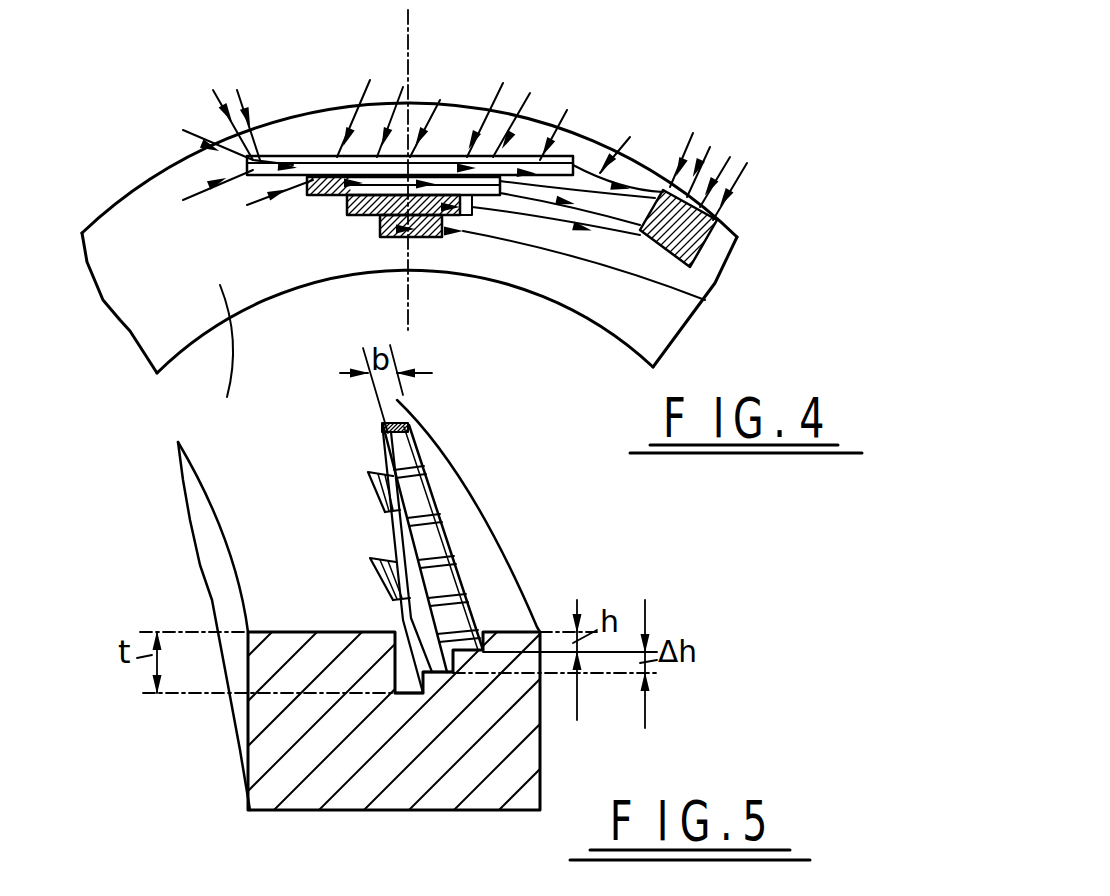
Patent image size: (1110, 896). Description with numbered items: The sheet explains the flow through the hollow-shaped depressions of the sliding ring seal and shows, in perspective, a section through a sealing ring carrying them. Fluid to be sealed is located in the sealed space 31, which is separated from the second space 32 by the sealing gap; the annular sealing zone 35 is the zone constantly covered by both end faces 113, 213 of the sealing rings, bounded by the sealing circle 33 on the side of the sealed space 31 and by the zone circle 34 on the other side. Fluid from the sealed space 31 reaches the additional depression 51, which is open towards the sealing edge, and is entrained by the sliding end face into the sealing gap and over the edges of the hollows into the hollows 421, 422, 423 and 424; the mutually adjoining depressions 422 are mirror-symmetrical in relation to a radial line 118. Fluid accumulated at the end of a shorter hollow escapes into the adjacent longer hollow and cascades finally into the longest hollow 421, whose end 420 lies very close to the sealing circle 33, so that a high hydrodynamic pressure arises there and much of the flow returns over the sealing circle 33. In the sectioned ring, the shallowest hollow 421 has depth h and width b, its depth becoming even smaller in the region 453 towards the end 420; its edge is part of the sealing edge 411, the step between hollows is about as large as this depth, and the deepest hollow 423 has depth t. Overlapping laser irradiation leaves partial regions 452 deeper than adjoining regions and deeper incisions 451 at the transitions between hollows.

In FIG. 4, the sealed space 31 is at (647, 118).
In FIG. 4, the second space 32 is at (547, 362).
In FIG. 4, the sealing circle 33 is at (157, 182).
In FIG. 4, the zone circle 34 is at (593, 330).
In FIG. 5, the annular sealing zone 35 is at (290, 460).
In FIG. 4, the additional depression 51 is at (720, 222).
In FIG. 5, the end face 113 is at (379, 648).
In FIG. 4, the radial line 118 is at (407, 72).
In FIG. 5, the end face 213 is at (379, 648).
In FIG. 5, the sealing edge 411 is at (495, 540).
In FIG. 4, the end of the hollow 420 is at (252, 160).
In FIG. 5, the end of the hollow 420 is at (377, 427).
In FIG. 4, the longest hollow 421 is at (530, 167).
In FIG. 5, the longest hollow 421 is at (450, 587).
In FIG. 4, the hollow 422 is at (443, 153).
In FIG. 5, the hollow 422 is at (430, 655).
In FIG. 4, the deepest hollow 423 is at (463, 230).
In FIG. 5, the deepest hollow 423 is at (413, 690).
In FIG. 4, the hollow 424 is at (390, 240).
In FIG. 5, the deeper incision 451 is at (440, 675).
In FIG. 5, the partial region 452 is at (440, 550).
In FIG. 5, the region 453 is at (407, 457).